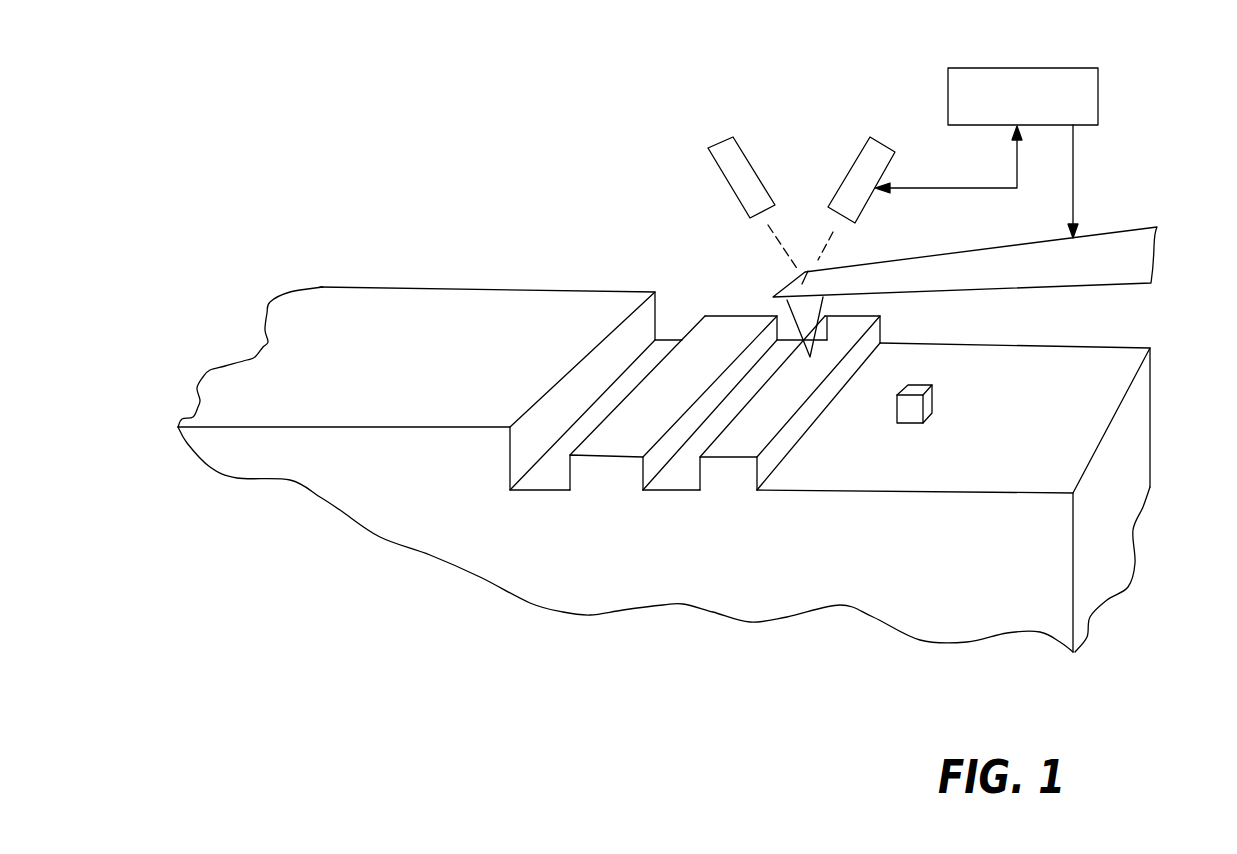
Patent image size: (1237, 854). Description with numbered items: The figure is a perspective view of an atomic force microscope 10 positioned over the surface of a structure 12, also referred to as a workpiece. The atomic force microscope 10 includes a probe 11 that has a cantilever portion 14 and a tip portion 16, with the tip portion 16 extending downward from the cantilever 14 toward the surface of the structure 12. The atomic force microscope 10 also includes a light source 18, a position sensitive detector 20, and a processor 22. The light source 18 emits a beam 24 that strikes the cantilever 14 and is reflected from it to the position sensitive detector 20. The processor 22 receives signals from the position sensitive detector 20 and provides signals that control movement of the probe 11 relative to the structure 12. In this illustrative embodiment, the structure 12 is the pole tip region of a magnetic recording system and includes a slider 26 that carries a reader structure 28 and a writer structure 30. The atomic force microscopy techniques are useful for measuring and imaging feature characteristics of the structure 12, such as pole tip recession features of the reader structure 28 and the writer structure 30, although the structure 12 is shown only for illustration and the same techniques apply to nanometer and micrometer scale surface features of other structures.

The atomic force microscope 10 is at (833, 90).
The probe 11 is at (1177, 257).
The structure 12 is at (1122, 543).
The cantilever portion 14 is at (1133, 247).
The tip portion 16 is at (805, 308).
The light source 18 is at (738, 162).
The position sensitive detector 20 is at (886, 158).
The processor 22 is at (1089, 86).
The beam 24 is at (770, 242).
The slider 26 is at (467, 312).
The reader structure 28 is at (712, 333).
The writer structure 30 is at (933, 392).